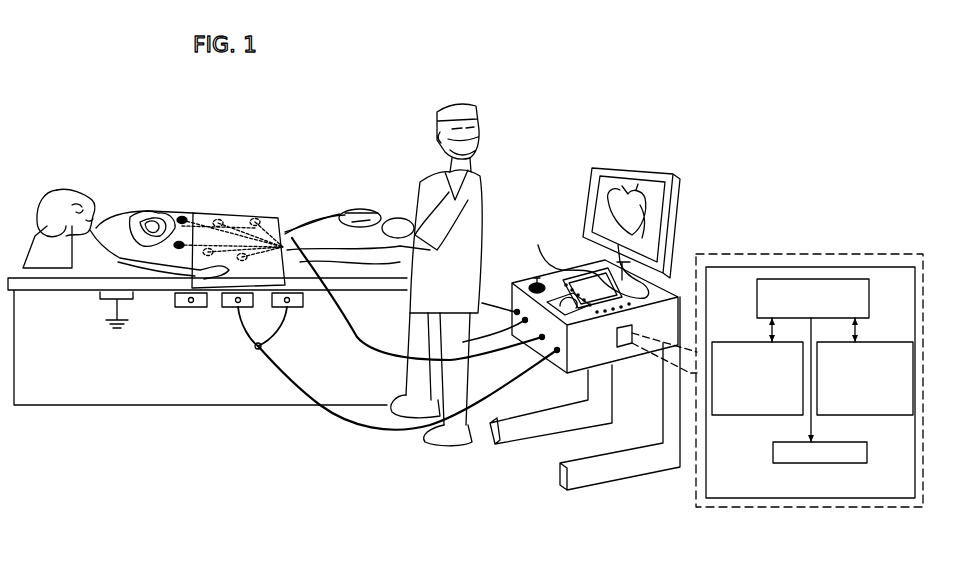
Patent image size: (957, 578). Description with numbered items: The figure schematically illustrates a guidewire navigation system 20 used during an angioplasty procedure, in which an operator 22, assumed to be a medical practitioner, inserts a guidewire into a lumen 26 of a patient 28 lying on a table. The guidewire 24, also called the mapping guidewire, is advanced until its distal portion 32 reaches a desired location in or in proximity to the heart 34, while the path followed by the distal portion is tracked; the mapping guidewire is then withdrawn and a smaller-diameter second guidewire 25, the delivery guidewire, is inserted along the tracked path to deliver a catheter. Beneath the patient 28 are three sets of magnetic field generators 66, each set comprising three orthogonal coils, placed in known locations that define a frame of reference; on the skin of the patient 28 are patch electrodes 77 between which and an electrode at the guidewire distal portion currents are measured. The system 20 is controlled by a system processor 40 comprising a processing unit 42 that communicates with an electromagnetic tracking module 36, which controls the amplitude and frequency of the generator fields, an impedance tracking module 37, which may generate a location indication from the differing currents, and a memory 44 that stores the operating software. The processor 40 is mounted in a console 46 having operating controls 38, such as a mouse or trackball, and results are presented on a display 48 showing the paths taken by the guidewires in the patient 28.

The guidewire navigation system 20 is at (567, 130).
The operator 22 is at (455, 108).
The guidewire 24 is at (327, 213).
The second guidewire 25 is at (505, 316).
The lumen 26 is at (228, 147).
The patient 28 is at (333, 262).
The distal portion 32 is at (142, 112).
The heart 34 is at (154, 246).
The electromagnetic tracking module 36 is at (735, 342).
The impedance tracking module 37 is at (907, 342).
The operating controls 38 is at (520, 238).
The system processor 40 is at (697, 488).
The processing unit 42 is at (777, 279).
The memory 44 is at (773, 456).
The console 46 is at (550, 278).
The display 48 is at (604, 162).
The generators 66 is at (191, 307).
The patch electrodes 77 is at (255, 218).